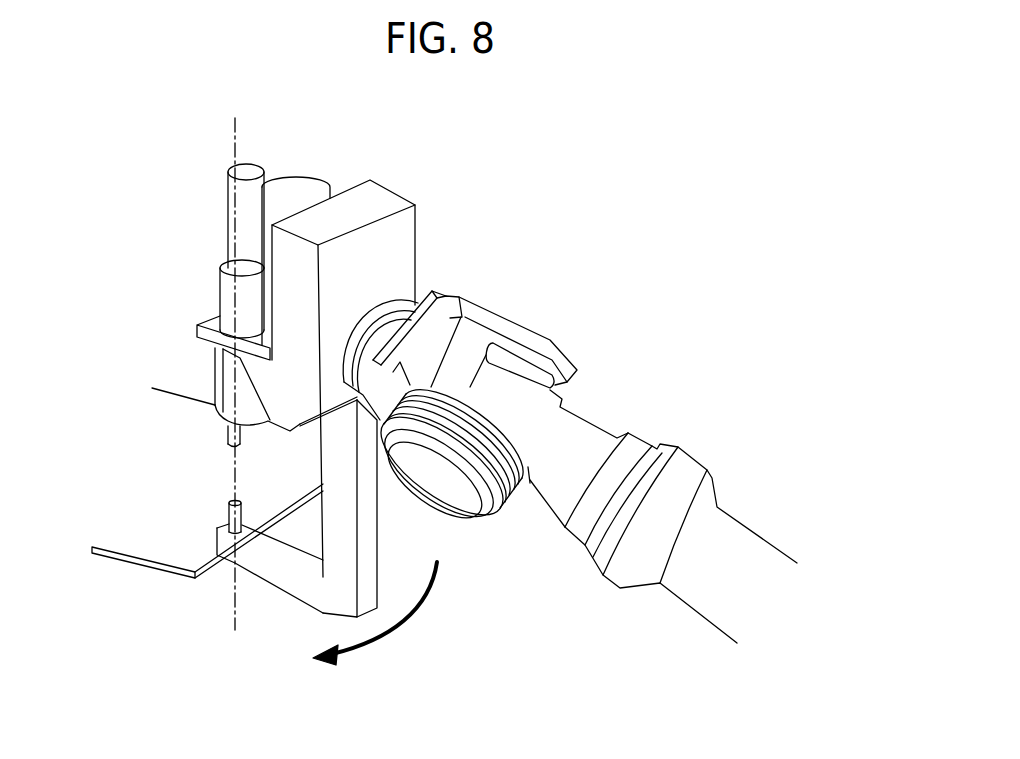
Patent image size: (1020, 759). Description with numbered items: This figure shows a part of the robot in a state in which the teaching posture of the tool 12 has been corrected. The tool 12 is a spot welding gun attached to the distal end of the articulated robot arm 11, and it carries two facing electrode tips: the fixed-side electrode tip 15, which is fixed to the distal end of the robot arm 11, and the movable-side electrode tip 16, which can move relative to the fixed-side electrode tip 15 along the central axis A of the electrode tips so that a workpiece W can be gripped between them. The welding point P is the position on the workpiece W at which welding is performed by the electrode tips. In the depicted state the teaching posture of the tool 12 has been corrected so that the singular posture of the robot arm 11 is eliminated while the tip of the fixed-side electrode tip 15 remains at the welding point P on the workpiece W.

The robot arm 11 is at (603, 424).
The tool 12 is at (190, 258).
The fixed-side electrode tip 15 is at (228, 503).
The movable-side electrode tip 16 is at (225, 435).
The central axis A is at (235, 359).
The welding point P is at (235, 502).
The workpiece W is at (138, 532).